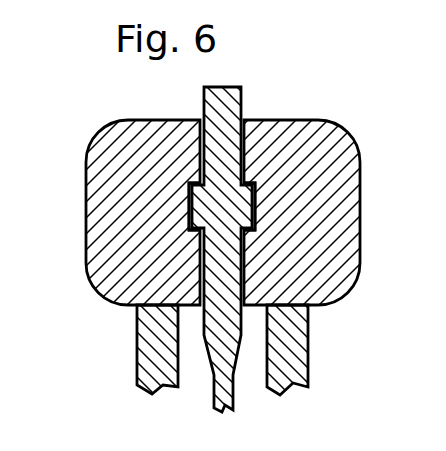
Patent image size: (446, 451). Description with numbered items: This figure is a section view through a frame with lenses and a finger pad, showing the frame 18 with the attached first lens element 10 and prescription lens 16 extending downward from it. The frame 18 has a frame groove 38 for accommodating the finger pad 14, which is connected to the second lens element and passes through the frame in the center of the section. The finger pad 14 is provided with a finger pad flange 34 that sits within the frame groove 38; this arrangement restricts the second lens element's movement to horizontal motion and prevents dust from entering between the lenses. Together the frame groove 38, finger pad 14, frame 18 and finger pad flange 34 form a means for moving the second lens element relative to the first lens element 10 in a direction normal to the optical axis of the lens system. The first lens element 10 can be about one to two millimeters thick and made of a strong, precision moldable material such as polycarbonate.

The first lens element 10 is at (308, 338).
The finger pad 14 is at (240, 110).
The prescription lens 16 is at (137, 338).
The frame 18 is at (100, 131).
The finger pad flange 34 is at (254, 204).
The frame groove 38 is at (190, 187).